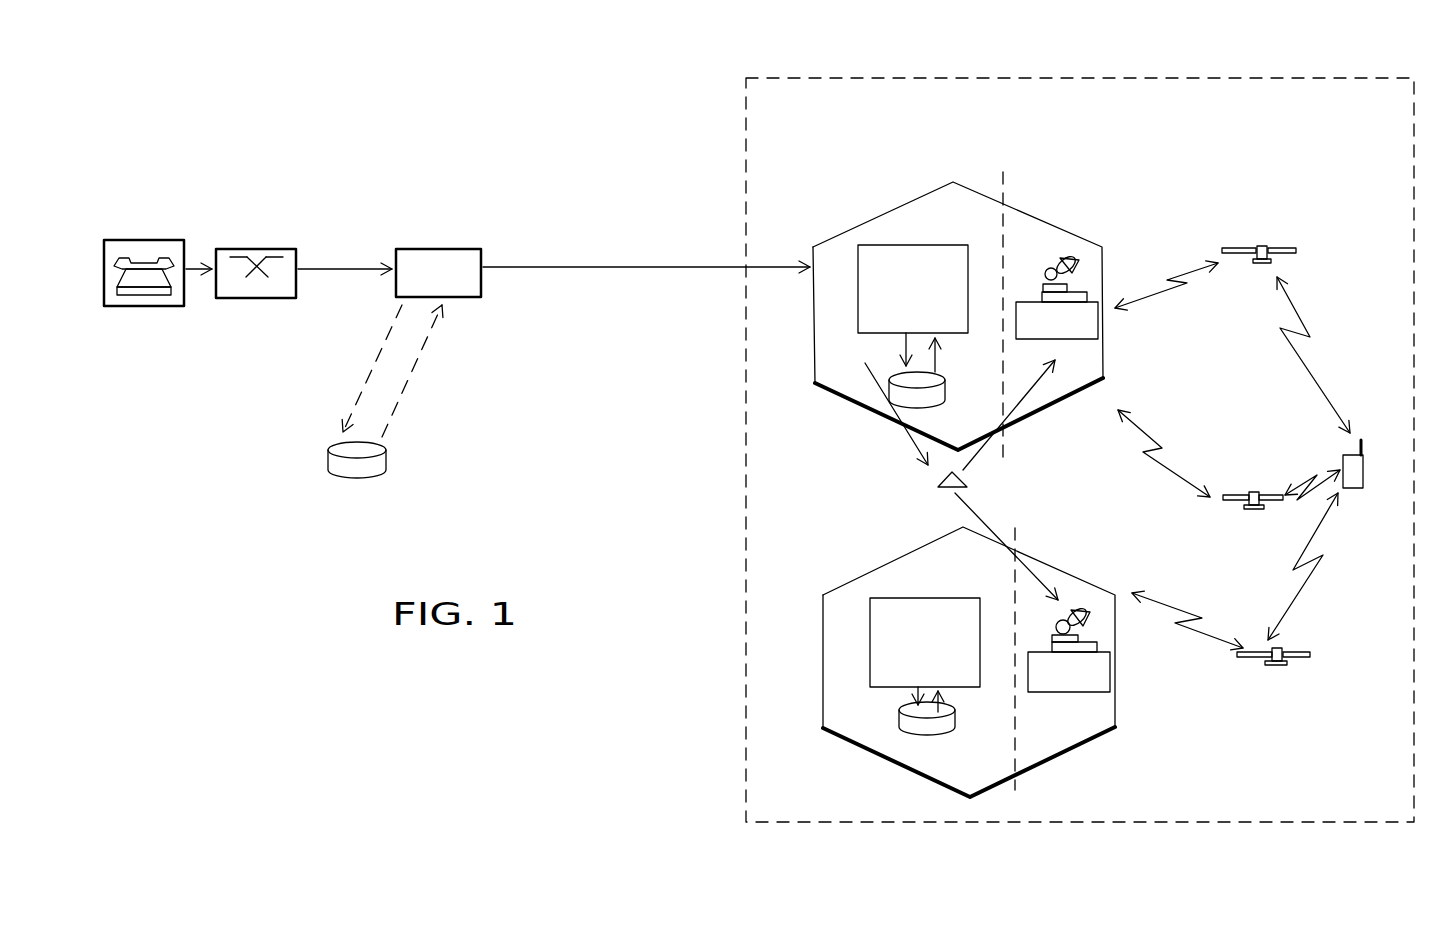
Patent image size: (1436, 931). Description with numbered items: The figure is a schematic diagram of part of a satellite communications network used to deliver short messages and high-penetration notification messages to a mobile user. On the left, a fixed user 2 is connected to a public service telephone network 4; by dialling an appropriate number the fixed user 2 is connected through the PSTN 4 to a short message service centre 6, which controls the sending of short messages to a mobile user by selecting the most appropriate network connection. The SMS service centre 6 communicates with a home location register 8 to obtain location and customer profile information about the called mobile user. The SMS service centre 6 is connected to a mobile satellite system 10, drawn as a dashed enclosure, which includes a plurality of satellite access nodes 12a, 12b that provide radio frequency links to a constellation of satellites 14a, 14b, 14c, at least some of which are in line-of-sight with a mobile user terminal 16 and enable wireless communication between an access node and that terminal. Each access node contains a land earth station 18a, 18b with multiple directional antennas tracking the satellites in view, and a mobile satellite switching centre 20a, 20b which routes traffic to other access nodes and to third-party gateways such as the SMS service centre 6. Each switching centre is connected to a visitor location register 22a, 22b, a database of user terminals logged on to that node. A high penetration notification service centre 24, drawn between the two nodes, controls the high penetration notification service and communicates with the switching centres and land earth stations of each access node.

The fixed user 2 is at (135, 240).
The public service telephone network 4 is at (236, 249).
The short message service centre 6 is at (432, 249).
The home location register 8 is at (380, 468).
The mobile satellite system 10 is at (735, 129).
The satellite access node 12a is at (1106, 381).
The satellite access node 12b is at (1062, 753).
The satellite 14a is at (1262, 245).
The satellite 14b is at (1255, 491).
The satellite 14c is at (1280, 668).
The mobile user terminal 16 is at (1362, 490).
The land earth station 18a is at (1082, 327).
The land earth station 18b is at (1080, 679).
The mobile satellite switching centre 20a is at (880, 268).
The mobile satellite switching centre 20b is at (892, 630).
The visitor location register 22a is at (900, 400).
The visitor location register 22b is at (903, 728).
The high penetration notification service centre 24 is at (963, 487).